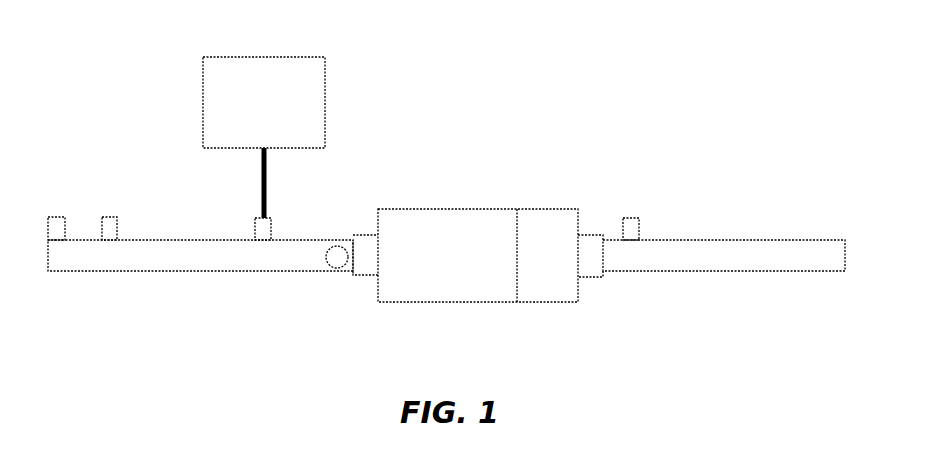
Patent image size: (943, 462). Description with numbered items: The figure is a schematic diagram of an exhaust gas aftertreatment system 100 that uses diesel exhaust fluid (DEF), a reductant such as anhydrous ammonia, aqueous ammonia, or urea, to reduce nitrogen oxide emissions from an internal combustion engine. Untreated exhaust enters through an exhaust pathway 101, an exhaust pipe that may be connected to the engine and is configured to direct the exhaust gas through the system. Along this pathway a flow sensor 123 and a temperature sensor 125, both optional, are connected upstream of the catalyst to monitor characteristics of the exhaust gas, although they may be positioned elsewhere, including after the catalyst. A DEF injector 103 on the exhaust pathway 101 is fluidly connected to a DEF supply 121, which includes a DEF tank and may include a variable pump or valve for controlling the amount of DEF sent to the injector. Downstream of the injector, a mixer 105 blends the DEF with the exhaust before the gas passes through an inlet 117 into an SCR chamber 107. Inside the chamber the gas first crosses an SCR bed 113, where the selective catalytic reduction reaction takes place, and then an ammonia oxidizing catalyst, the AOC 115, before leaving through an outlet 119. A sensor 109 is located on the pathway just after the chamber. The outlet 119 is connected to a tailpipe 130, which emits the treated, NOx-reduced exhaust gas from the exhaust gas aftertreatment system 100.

The exhaust gas aftertreatment system 100 is at (570, 90).
The exhaust pathway 101 is at (168, 272).
The DEF injector 103 is at (253, 228).
The mixer 105 is at (325, 243).
The SCR chamber 107 is at (482, 252).
The sensor 109 is at (620, 230).
The SCR bed 113 is at (437, 303).
The AOC 115 is at (547, 303).
The inlet 117 is at (363, 278).
The outlet 119 is at (593, 277).
The DEF supply 121 is at (201, 78).
The flow sensor 123 is at (65, 225).
The temperature sensor 125 is at (117, 229).
The tailpipe 130 is at (740, 272).